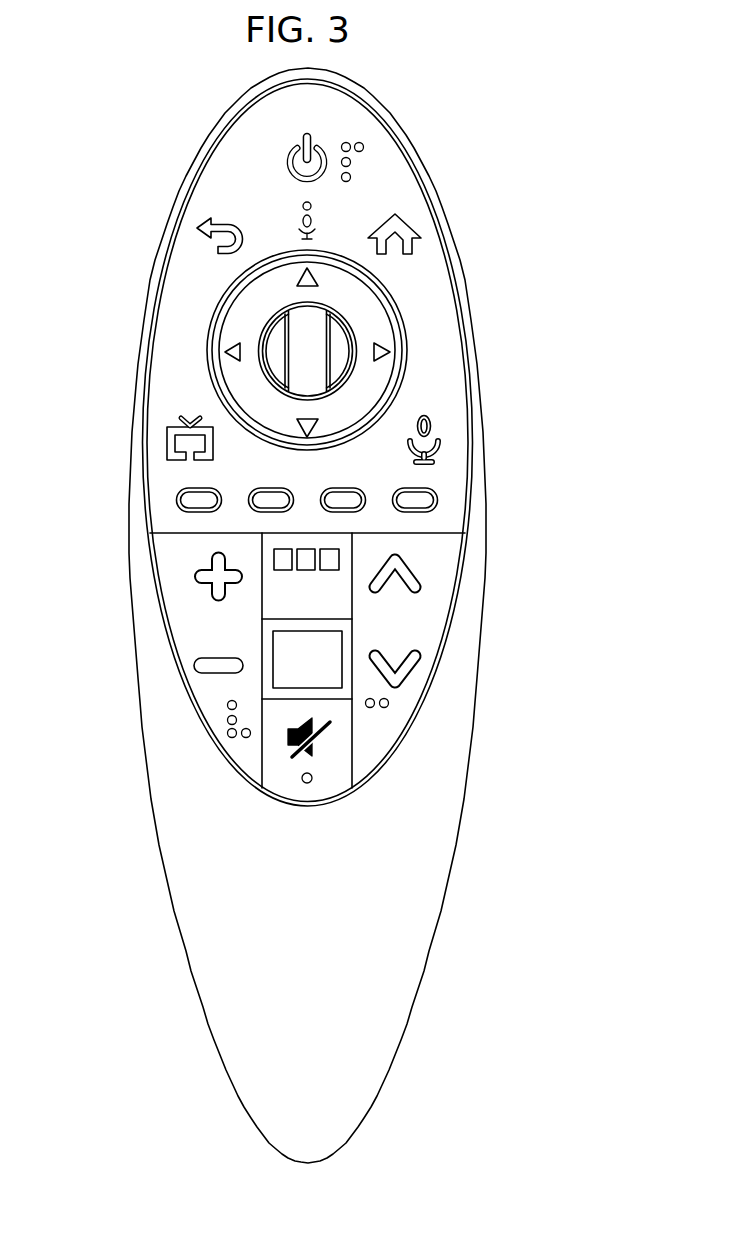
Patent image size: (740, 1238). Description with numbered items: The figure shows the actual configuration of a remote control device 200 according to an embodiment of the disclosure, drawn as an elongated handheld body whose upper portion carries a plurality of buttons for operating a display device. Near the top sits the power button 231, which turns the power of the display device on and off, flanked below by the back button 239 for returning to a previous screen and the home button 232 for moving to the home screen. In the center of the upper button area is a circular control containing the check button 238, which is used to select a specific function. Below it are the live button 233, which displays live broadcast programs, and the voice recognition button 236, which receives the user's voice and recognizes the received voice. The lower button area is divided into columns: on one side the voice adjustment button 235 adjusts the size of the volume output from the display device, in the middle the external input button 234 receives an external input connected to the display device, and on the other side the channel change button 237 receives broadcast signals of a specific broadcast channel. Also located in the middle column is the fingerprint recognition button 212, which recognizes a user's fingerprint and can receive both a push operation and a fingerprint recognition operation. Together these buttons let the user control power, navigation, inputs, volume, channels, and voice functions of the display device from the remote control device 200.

The remote control device 200 is at (76, 107).
The fingerprint recognition button 212 is at (325, 689).
The power button 231 is at (321, 152).
The home button 232 is at (420, 227).
The live button 233 is at (167, 441).
The external input button 234 is at (316, 548).
The voice adjustment button 235 is at (164, 631).
The voice recognition button 236 is at (438, 432).
The channel change button 237 is at (430, 612).
The check button 238 is at (267, 326).
The back button 239 is at (200, 236).